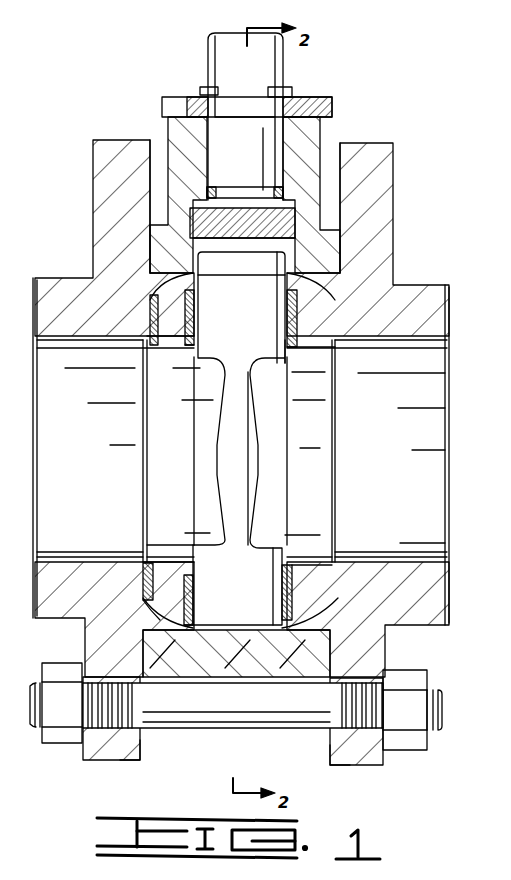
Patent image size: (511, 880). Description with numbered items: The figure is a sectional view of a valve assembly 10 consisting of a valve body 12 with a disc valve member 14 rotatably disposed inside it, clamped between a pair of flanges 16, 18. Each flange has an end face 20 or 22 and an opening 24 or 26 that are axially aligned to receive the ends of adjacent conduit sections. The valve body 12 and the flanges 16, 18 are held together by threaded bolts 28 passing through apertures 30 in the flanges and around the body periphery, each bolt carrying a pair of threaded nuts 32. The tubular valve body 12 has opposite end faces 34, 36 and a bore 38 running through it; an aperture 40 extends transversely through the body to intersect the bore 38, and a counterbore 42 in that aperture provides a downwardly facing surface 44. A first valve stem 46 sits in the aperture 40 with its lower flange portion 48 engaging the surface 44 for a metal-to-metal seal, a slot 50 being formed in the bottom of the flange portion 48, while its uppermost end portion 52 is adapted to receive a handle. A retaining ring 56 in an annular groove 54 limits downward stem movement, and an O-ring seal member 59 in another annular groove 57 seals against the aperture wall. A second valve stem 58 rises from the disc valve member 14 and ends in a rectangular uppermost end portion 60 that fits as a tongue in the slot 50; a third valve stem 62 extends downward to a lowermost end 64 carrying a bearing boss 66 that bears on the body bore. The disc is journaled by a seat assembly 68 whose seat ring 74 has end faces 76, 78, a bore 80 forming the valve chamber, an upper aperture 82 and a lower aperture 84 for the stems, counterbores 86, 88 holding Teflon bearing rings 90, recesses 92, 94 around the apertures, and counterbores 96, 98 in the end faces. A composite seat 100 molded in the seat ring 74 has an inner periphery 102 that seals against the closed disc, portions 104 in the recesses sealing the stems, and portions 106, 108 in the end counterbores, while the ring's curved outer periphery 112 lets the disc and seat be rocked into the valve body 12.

The valve assembly 10 is at (352, 121).
The valve body 12 is at (218, 680).
The disc valve member 14 is at (252, 442).
The flange 16 is at (100, 758).
The flange 18 is at (350, 766).
The end face 20 is at (142, 755).
The end face 22 is at (330, 748).
The opening 24 is at (52, 550).
The opening 26 is at (432, 560).
The threaded bolt 28 is at (155, 722).
The aperture 30 is at (125, 690).
The threaded nut 32 is at (65, 735).
The end face 34 is at (142, 642).
The end face 36 is at (332, 655).
The bore 38 is at (300, 635).
The aperture 40 is at (208, 150).
The counterbore 42 is at (295, 232).
The downwardly facing surface 44 is at (290, 215).
The first valve stem 46 is at (318, 100).
The lower flange portion 48 is at (246, 249).
The slot 50 is at (190, 240).
The uppermost end portion 52 is at (270, 80).
The annular groove 54 is at (220, 92).
The retaining ring 56 is at (205, 87).
The annular groove 57 is at (246, 196).
The second valve stem 58 is at (270, 352).
The O-ring seal member 59 is at (205, 190).
The uppermost end portion 60 is at (266, 307).
The third valve stem 62 is at (270, 550).
The lowermost end 64 is at (212, 640).
The bearing boss 66 is at (240, 635).
The seat assembly 68 is at (160, 545).
The seat ring 74 is at (150, 330).
The end face 76 is at (148, 580).
The end face 78 is at (325, 612).
The bore 80 is at (295, 555).
The upper aperture 82 is at (198, 285).
The lower aperture 84 is at (184, 610).
The counterbore 86 is at (340, 290).
The second counterbore 88 is at (159, 586).
The bearing ring 90 is at (194, 320).
The recess 92 is at (295, 322).
The recess 94 is at (300, 592).
The counterbore 96 is at (148, 560).
The counterbore 98 is at (320, 592).
The composite seat 100 is at (165, 352).
The inner periphery 102 is at (168, 555).
The portion 104 is at (194, 340).
The portion 106 is at (152, 312).
The portion 108 is at (335, 340).
The outer periphery 112 is at (145, 598).